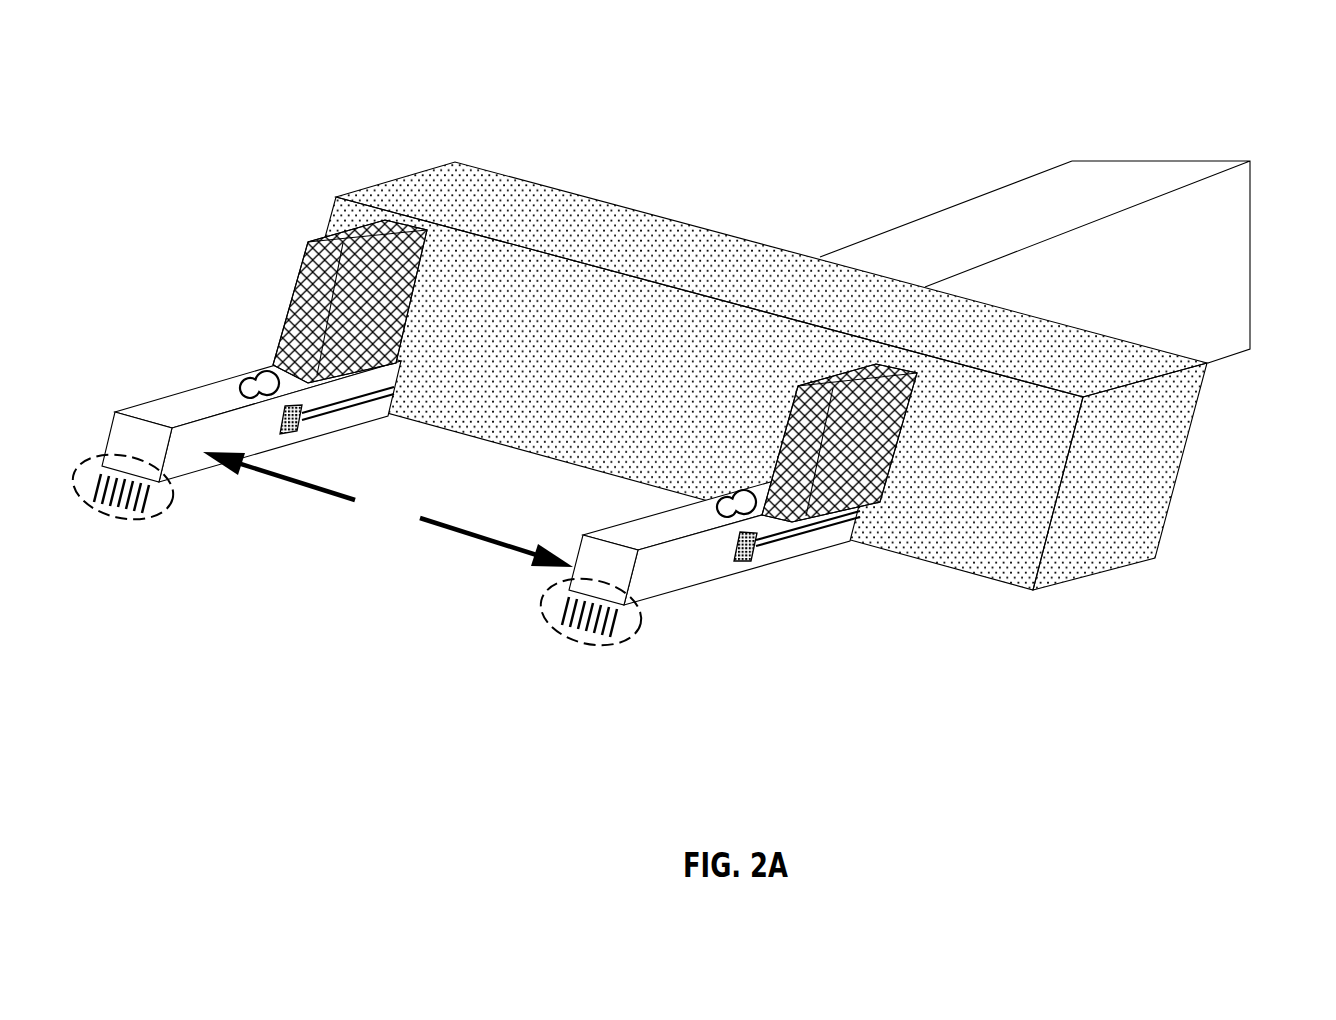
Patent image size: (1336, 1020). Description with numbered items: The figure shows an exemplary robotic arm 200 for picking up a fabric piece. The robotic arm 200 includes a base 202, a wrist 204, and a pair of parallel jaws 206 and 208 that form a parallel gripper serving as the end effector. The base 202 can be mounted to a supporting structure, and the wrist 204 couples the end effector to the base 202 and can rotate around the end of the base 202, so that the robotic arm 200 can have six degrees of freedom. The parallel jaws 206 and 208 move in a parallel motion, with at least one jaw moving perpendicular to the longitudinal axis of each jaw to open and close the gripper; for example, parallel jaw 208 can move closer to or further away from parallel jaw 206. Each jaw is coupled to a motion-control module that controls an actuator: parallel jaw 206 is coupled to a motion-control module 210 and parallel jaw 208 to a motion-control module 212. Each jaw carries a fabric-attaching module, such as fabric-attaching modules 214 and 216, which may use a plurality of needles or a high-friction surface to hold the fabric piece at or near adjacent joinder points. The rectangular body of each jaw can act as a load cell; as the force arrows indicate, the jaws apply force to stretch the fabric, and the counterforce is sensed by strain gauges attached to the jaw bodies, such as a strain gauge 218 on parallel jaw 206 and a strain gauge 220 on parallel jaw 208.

The robotic arm 200 is at (195, 127).
The base 202 is at (1233, 223).
The wrist 204 is at (499, 212).
The parallel jaw 206 is at (142, 420).
The parallel jaw 208 is at (612, 542).
The motion-control module 210 is at (293, 310).
The motion-control module 212 is at (883, 490).
The fabric-attaching module 214 is at (116, 519).
The fabric-attaching module 216 is at (585, 644).
The strain gauge 218 is at (295, 431).
The strain gauge 220 is at (745, 563).